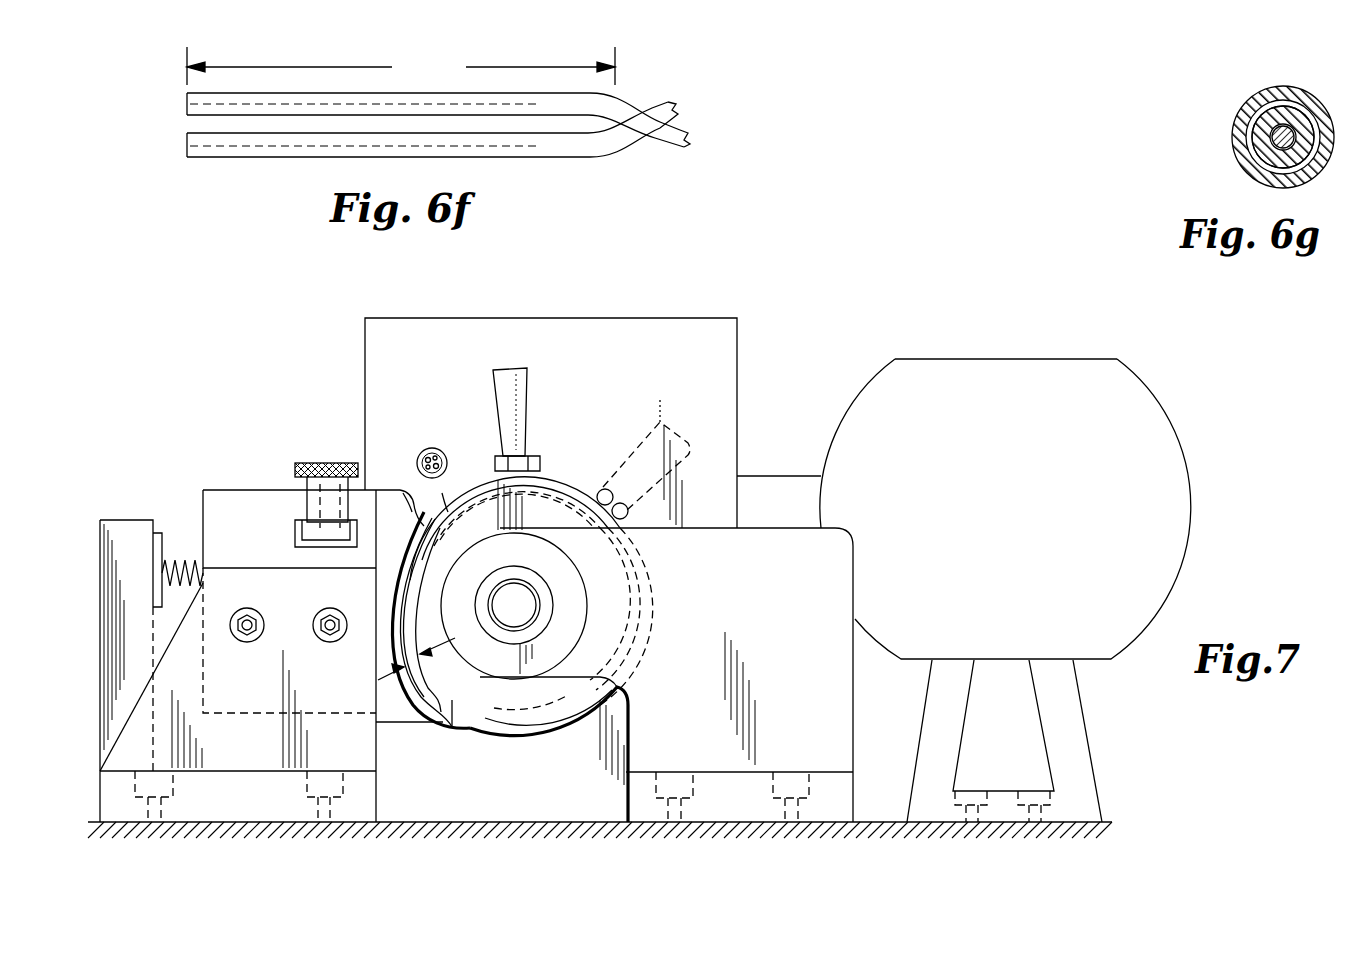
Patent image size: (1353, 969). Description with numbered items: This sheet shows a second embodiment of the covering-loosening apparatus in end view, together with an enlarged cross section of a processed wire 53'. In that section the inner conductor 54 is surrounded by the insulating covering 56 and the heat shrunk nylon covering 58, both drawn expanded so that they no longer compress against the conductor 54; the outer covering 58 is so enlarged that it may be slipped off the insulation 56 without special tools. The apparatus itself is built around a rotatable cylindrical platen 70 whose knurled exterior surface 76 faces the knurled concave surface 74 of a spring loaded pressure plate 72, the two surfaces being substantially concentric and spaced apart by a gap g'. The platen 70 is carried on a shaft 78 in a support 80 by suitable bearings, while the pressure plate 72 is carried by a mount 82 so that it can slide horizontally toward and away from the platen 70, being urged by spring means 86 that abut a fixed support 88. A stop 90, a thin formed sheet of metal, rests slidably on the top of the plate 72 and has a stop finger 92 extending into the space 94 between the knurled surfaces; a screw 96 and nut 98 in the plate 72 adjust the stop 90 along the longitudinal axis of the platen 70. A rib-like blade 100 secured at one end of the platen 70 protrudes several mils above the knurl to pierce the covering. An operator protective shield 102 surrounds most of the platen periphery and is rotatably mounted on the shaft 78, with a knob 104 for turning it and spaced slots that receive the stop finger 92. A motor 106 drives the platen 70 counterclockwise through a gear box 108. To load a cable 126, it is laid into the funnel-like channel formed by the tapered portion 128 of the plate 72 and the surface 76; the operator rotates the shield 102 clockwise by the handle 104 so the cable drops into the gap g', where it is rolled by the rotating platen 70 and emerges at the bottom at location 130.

In FIG. 6G, the wire 53' is at (1207, 174).
In FIG. 6G, the inner conductor 54 is at (1280, 126).
In FIG. 6G, the outer insulating covering 56 is at (1252, 140).
In FIG. 6G, the heat shrunk nylon covering 58 is at (1304, 97).
In FIG. 7, the rotatable cylindrical platen 70 is at (458, 705).
In FIG. 7, the spring loaded pressure plate 72 is at (396, 712).
In FIG. 7, the concave surface 74 is at (393, 577).
In FIG. 7, the knurled exterior surface 76 is at (482, 730).
In FIG. 7, the shaft 78 is at (526, 615).
In FIG. 7, the support 80 is at (755, 610).
In FIG. 7, the mount 82 is at (388, 797).
In FIG. 7, the spring means 86 is at (187, 545).
In FIG. 7, the fixed support 88 is at (125, 522).
In FIG. 7, the stop 90 is at (243, 490).
In FIG. 7, the stop finger 92 is at (418, 487).
In FIG. 7, the space 94 is at (442, 493).
In FIG. 7, the screw 96 is at (318, 463).
In FIG. 7, the nut 98 is at (297, 538).
In FIG. 7, the blade 100 is at (396, 596).
In FIG. 7, the operator protective shield 102 is at (580, 490).
In FIG. 7, the knob 104 is at (527, 377).
In FIG. 7, the motor 106 is at (1003, 358).
In FIG. 7, the gear box 108 is at (738, 360).
In FIG. 7, the cable 126 is at (430, 448).
In FIG. 7, the tapered portion 128 is at (418, 535).
In FIG. 7, the exit location 130 is at (450, 712).
In FIG. 7, the gap g' is at (428, 651).